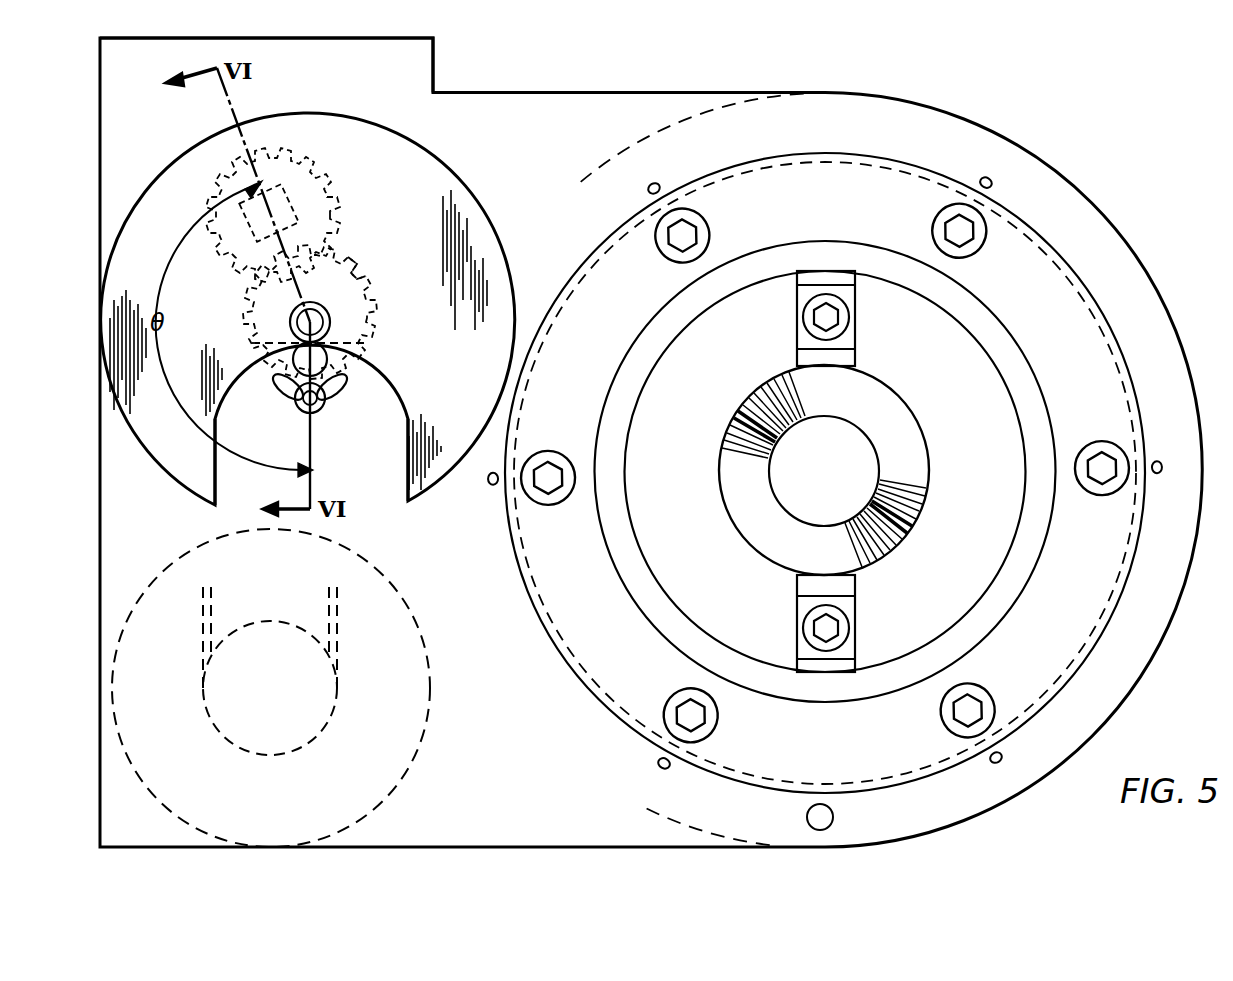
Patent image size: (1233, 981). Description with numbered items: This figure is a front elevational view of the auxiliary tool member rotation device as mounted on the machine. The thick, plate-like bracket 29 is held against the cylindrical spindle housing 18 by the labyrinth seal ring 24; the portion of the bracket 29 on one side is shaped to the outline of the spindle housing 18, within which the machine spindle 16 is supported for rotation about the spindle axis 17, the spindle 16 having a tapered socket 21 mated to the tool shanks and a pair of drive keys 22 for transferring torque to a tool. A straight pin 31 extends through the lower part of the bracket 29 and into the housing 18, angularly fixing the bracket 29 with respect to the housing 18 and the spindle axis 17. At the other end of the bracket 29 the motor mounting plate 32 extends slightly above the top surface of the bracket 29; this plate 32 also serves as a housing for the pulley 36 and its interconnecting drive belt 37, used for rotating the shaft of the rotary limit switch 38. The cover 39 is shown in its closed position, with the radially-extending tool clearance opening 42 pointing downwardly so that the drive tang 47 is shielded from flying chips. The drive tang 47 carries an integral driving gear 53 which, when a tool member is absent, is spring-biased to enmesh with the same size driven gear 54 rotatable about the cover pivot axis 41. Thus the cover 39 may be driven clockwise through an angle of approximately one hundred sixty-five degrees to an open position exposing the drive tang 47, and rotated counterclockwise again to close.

The machine spindle 16 is at (974, 327).
The spindle axis 17 is at (823, 466).
The spindle housing 18 is at (712, 104).
The tapered socket 21 is at (720, 474).
The drive keys 22 is at (796, 301).
The labyrinth seal ring 24 is at (898, 154).
The bracket 29 is at (581, 92).
The pin 31 is at (834, 814).
The motor mounting plate 32 is at (434, 56).
The pulley 36 is at (300, 752).
The drive belt 37 is at (340, 645).
The rotary limit switch 38 is at (398, 790).
The cover 39 is at (308, 309).
The cover pivot axis 41 is at (312, 322).
The tool clearance opening 42 is at (218, 470).
The drive tang 47 is at (300, 170).
The driving gear 53 is at (338, 242).
The driven gear 54 is at (348, 270).